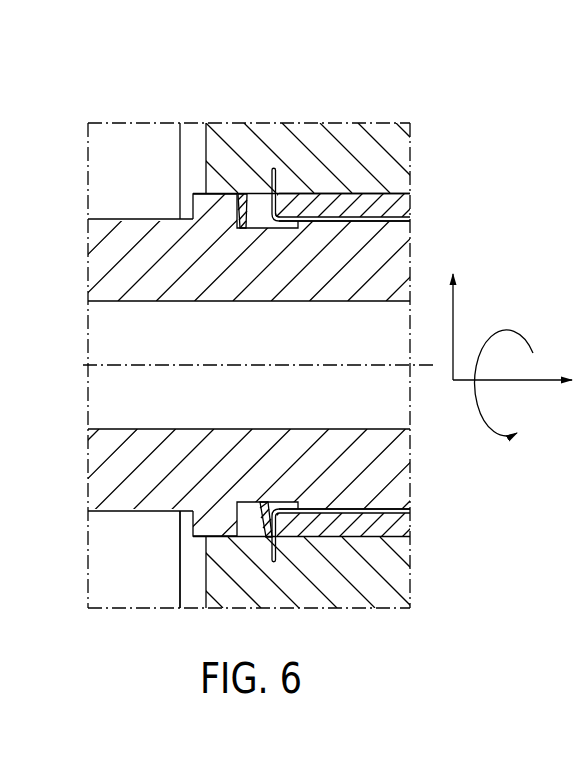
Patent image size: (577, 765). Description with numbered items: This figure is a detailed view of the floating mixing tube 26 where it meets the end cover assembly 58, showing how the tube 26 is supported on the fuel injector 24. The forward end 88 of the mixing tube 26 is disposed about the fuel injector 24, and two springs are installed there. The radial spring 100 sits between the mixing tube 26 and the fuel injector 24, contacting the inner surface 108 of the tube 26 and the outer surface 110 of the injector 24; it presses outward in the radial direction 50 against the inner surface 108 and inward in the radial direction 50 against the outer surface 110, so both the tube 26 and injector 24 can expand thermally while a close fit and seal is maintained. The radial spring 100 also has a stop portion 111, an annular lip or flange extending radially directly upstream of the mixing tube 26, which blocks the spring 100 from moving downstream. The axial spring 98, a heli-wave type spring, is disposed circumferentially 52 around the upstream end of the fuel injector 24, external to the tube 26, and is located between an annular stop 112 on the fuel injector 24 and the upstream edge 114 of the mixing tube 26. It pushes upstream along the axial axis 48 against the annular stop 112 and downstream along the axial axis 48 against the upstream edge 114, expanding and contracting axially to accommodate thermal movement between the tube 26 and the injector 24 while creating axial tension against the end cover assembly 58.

The fuel injector 24 is at (392, 393).
The mixing tube 26 is at (395, 196).
The axial direction 48 is at (508, 384).
The radial direction 50 is at (455, 332).
The circumferential direction 52 is at (475, 403).
The end cover assembly 58 is at (138, 124).
The forward end 88 is at (368, 576).
The axial spring 98 is at (249, 201).
The radial spring 100 is at (280, 177).
The inner surface 108 is at (393, 226).
The outer surface 110 is at (398, 217).
The stop portion 111 is at (279, 213).
The annular stop 112 is at (223, 222).
The upstream edge 114 is at (308, 193).